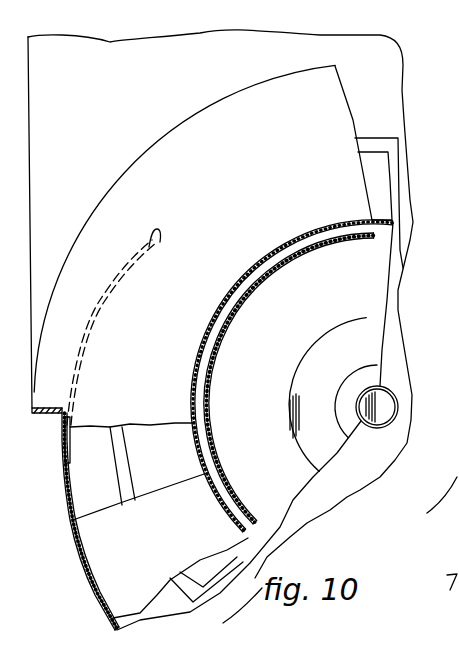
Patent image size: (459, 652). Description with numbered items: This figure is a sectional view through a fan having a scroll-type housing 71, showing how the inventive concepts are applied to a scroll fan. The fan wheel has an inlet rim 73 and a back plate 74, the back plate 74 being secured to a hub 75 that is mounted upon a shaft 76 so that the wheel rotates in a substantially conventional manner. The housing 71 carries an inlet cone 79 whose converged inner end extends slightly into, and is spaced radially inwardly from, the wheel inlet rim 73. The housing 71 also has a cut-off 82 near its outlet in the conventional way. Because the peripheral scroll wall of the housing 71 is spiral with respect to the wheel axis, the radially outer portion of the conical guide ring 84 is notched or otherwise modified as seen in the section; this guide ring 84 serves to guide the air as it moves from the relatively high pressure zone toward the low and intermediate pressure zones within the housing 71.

The scroll-type housing 71 is at (409, 85).
The inlet rim 73 is at (398, 176).
The back plate 74 is at (268, 365).
The hub 75 is at (375, 338).
The shaft 76 is at (387, 407).
The inlet cone 79 is at (281, 268).
The cut-off 82 is at (117, 297).
The conical guide ring 84 is at (315, 154).